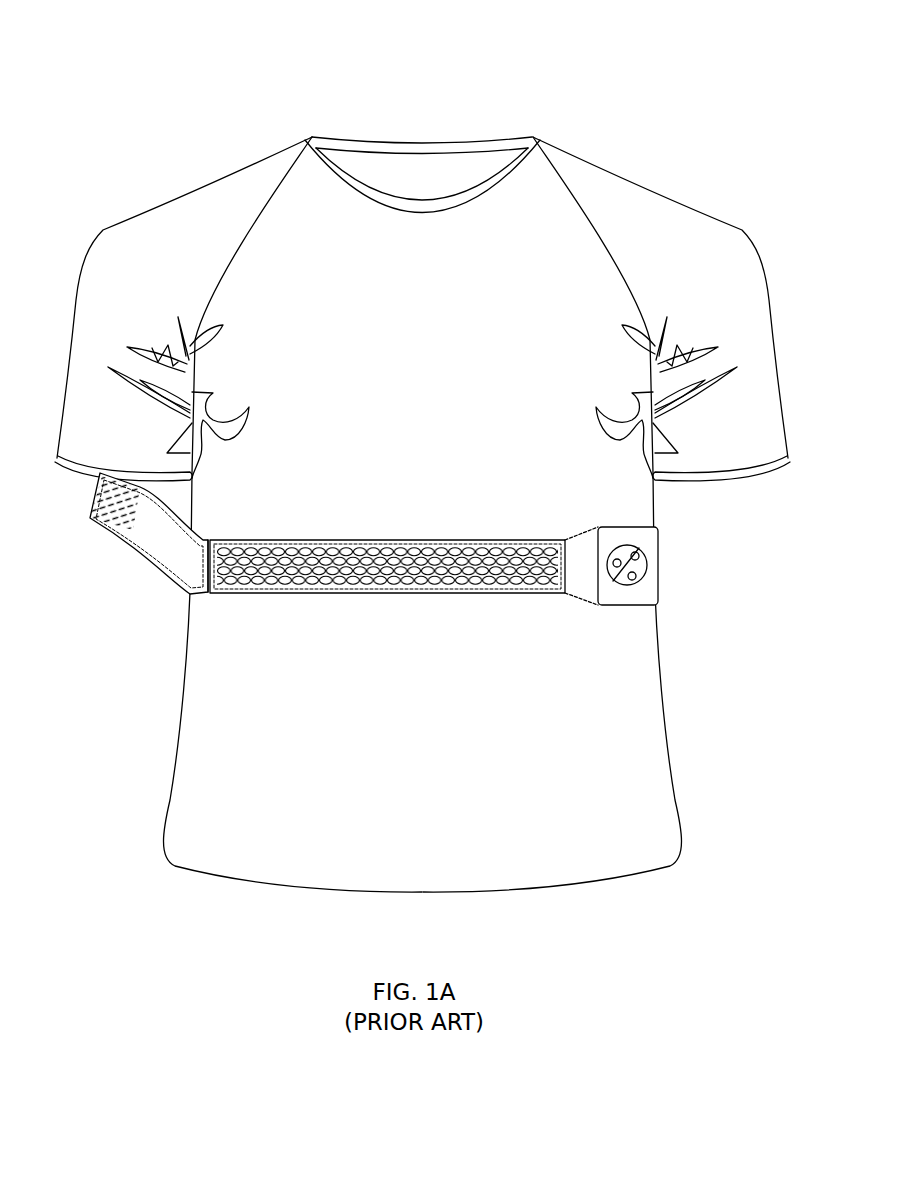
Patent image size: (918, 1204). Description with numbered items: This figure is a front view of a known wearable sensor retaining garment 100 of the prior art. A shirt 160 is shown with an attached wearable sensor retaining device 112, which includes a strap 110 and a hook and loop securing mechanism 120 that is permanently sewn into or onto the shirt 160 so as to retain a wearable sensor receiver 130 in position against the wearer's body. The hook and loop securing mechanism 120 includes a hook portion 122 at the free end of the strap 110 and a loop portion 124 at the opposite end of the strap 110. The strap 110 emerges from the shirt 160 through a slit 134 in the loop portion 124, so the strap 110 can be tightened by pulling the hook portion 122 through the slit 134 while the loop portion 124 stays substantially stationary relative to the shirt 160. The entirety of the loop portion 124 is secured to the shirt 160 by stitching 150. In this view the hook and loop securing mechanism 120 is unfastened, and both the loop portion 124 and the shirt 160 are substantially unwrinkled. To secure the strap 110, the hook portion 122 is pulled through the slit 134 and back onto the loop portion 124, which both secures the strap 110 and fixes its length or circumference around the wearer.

The wearable sensor retaining garment 100 is at (222, 77).
The strap 110 is at (152, 540).
The wearable sensor retaining device 112 is at (574, 536).
The hook and loop securing mechanism 120 is at (184, 598).
The hook portion 122 is at (100, 478).
The loop portion 124 is at (322, 573).
The wearable sensor receiver 130 is at (647, 560).
The slit 134 is at (210, 540).
The stitching 150 is at (306, 541).
The shirt 160 is at (527, 773).